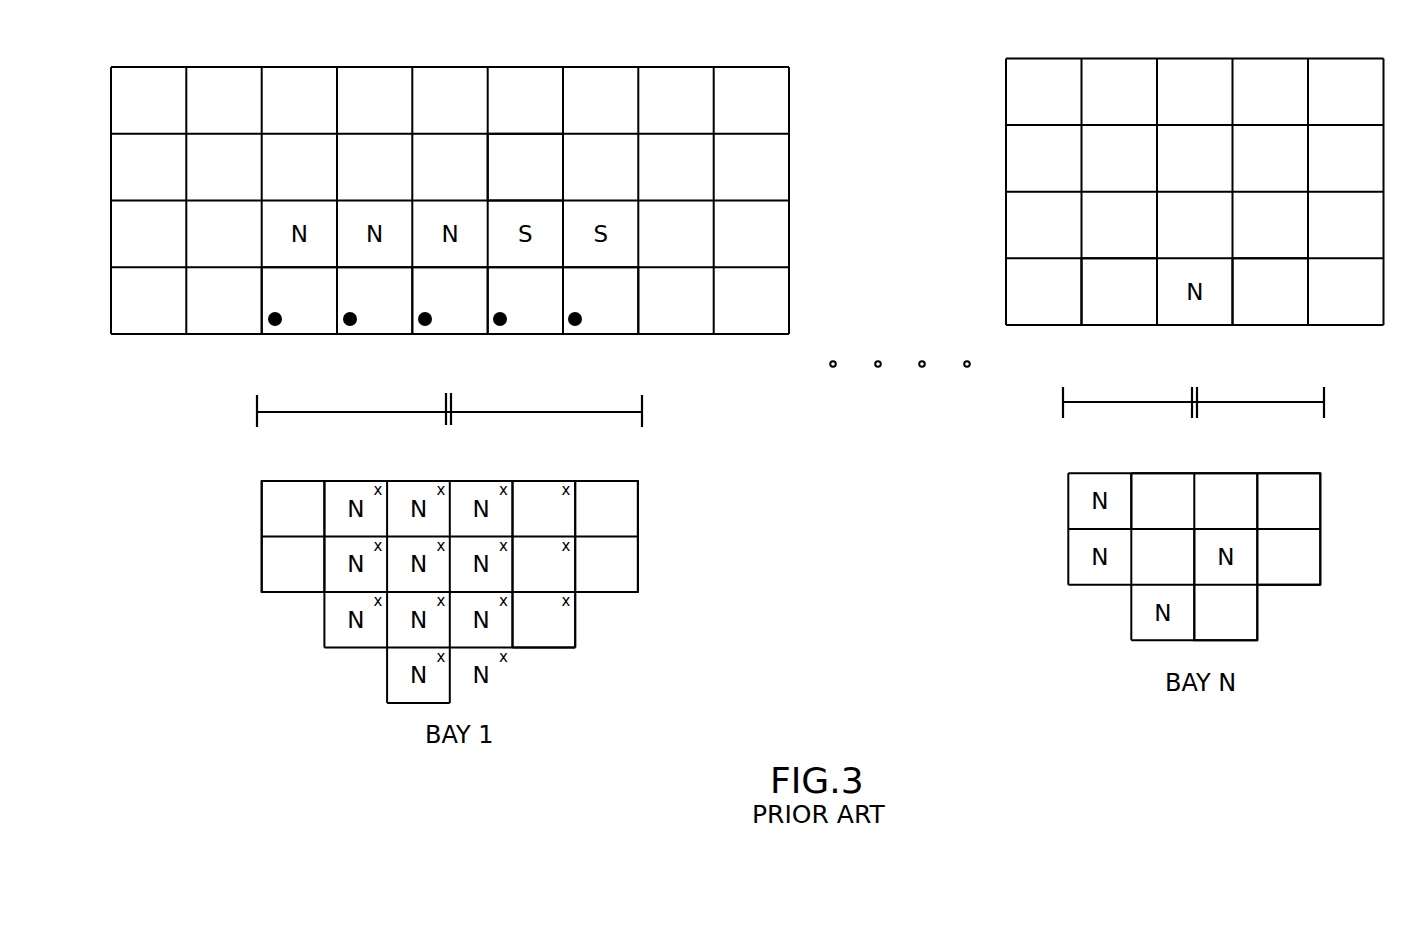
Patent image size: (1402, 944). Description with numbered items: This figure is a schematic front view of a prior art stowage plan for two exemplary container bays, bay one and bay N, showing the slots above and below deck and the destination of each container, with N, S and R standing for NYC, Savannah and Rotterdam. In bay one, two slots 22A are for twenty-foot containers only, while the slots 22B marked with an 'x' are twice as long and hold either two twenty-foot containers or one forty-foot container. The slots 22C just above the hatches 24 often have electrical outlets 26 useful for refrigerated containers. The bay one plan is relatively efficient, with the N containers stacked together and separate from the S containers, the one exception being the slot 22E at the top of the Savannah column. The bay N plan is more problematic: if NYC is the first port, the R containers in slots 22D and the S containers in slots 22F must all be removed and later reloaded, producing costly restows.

The slots for 20 ft containers only 22A is at (270, 510).
The double-length slots 22B is at (565, 522).
The slots above the hatches 22C is at (393, 323).
The slots holding R containers 22D is at (1130, 315).
The topmost slot in the Savannah column 22E is at (542, 157).
The slots holding S containers 22F is at (1277, 313).
The hatches 24 is at (298, 413).
The electrical outlets 26 is at (279, 325).